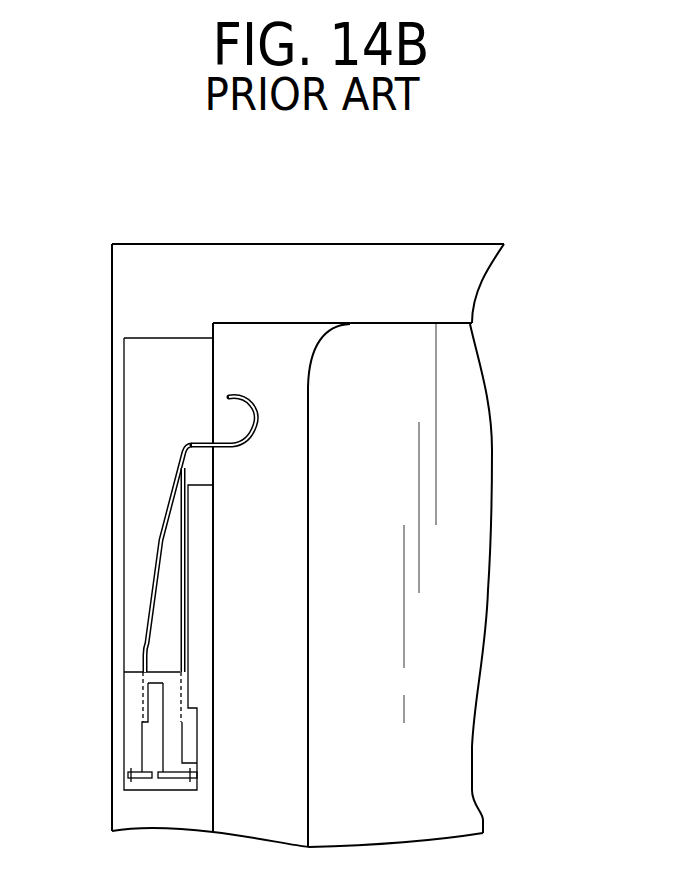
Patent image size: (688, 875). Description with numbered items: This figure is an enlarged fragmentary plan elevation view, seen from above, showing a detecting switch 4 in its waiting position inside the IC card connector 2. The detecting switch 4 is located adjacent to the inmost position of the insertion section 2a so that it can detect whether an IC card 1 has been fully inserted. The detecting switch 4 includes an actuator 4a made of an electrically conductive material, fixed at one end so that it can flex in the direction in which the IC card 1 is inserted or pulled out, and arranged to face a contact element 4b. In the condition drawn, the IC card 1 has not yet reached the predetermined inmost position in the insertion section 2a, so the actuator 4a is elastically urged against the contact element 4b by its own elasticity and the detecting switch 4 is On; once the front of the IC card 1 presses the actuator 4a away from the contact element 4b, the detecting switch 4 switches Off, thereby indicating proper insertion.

The IC card 1 is at (460, 407).
The IC card connector 2 is at (405, 244).
The insertion section 2a is at (249, 348).
The detecting switch 4 is at (160, 543).
The actuator 4a is at (182, 445).
The contact element 4b is at (192, 469).